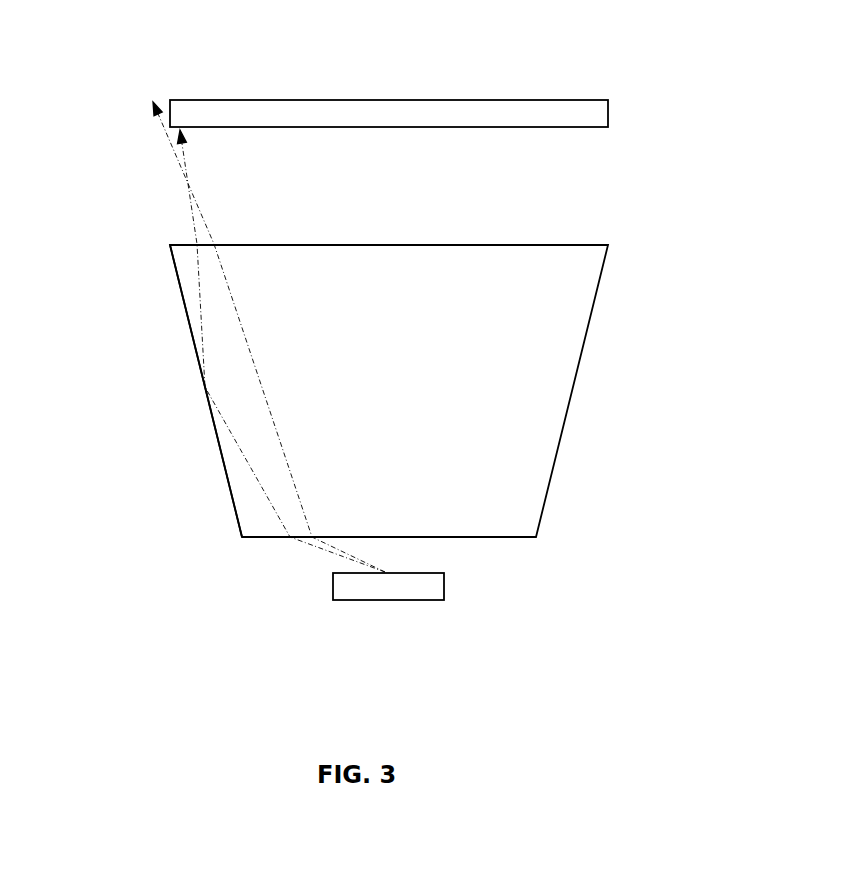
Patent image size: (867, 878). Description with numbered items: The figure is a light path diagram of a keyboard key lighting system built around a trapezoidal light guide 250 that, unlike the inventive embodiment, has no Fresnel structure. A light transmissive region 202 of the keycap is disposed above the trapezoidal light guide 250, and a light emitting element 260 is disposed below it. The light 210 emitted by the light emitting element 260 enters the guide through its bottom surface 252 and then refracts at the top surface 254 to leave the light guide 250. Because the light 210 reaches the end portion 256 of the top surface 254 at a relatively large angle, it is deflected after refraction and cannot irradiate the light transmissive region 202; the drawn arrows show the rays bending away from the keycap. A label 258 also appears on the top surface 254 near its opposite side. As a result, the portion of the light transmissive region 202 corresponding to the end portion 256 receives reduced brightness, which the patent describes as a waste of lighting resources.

The light transmissive region 202 is at (608, 110).
The light 210 is at (168, 137).
The trapezoidal light guide 250 is at (560, 445).
The bottom surface 252 is at (278, 537).
The top surface 254 is at (390, 245).
The end portion 256 is at (212, 245).
The exit region of top surface 258 is at (547, 245).
The light emitting element 260 is at (333, 588).